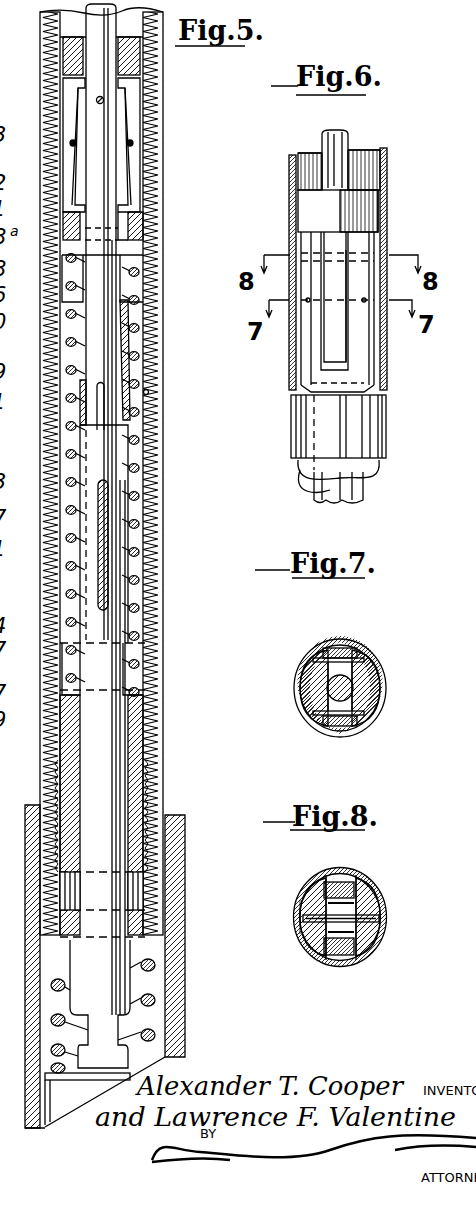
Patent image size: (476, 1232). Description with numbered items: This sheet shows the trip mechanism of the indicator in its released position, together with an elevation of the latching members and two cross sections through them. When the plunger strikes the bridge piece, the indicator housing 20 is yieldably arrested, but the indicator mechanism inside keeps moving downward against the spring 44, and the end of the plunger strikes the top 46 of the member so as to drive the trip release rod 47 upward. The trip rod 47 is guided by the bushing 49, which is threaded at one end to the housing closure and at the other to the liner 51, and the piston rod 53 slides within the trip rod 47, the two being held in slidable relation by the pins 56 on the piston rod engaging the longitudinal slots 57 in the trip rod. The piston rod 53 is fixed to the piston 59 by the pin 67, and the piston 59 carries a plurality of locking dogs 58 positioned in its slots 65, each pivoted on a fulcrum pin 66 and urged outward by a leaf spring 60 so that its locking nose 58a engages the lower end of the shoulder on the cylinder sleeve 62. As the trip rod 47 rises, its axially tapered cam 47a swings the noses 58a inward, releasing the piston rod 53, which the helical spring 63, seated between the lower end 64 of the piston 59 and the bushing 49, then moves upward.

In FIG. 5, the indicator housing 20 is at (176, 846).
In FIG. 5, the spring 44 is at (152, 976).
In FIG. 5, the top of the member 46 is at (44, 1092).
In FIG. 6, the trip release rod 47 is at (362, 490).
In FIG. 5, the axially tapered cam 47a is at (137, 346).
In FIG. 5, the bushing 49 is at (136, 706).
In FIG. 5, the liner 51 is at (149, 392).
In FIG. 5, the piston rod 53 is at (46, 36).
In FIG. 6, the piston rod 53 is at (330, 147).
In FIG. 7, the piston rod 53 is at (302, 695).
In FIG. 8, the piston rod 53 is at (380, 906).
In FIG. 5, the pins 56 is at (100, 426).
In FIG. 5, the longitudinal slots 57 is at (106, 508).
In FIG. 5, the locking dogs 58 is at (72, 101).
In FIG. 6, the locking dogs 58 is at (330, 342).
In FIG. 7, the locking dogs 58 is at (352, 649).
In FIG. 8, the locking dogs 58 is at (352, 876).
In FIG. 5, the locking noses 58a is at (140, 80).
In FIG. 6, the piston 59 is at (312, 216).
In FIG. 8, the leaf springs 60 is at (298, 941).
In FIG. 5, the cylinder sleeve 62 is at (146, 192).
In FIG. 6, the cylinder sleeve 62 is at (290, 167).
In FIG. 7, the cylinder sleeve 62 is at (308, 655).
In FIG. 8, the cylinder sleeve 62 is at (312, 883).
In FIG. 5, the helical spring 63 is at (136, 555).
In FIG. 6, the helical spring 63 is at (380, 470).
In FIG. 5, the lower end of the piston 64 is at (141, 240).
In FIG. 6, the slots 65 is at (350, 342).
In FIG. 7, the slots 65 is at (386, 700).
In FIG. 5, the fulcrum pin 66 is at (134, 148).
In FIG. 6, the fulcrum pin 66 is at (368, 302).
In FIG. 7, the fulcrum pin 66 is at (368, 663).
In FIG. 5, the pin 67 is at (104, 101).
In FIG. 6, the pin 67 is at (307, 286).
In FIG. 8, the pin 67 is at (377, 921).